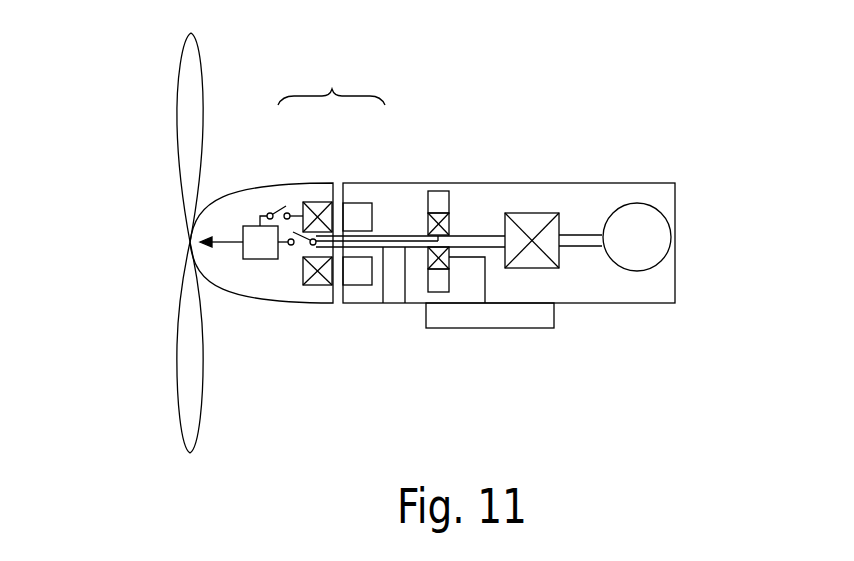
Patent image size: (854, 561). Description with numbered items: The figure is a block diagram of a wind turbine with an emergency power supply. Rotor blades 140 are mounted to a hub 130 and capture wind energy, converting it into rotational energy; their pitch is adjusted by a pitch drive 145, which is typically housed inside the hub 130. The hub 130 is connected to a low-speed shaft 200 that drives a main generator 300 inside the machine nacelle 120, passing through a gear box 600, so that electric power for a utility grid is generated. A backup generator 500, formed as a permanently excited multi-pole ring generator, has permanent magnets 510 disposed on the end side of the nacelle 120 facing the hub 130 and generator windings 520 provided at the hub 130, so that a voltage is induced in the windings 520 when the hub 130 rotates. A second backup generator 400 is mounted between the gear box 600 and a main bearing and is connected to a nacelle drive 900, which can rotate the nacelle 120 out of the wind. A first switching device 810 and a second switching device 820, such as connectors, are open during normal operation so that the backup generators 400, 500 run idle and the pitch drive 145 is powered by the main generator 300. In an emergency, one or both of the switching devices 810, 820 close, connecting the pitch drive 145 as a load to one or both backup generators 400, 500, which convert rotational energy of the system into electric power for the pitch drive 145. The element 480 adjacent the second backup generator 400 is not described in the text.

The rotor blades 140 is at (178, 85).
The pitch drive 145 is at (250, 226).
The second switching device 820 is at (276, 192).
The first switching device 810 is at (288, 260).
The backup generator 500 is at (331, 80).
The generator windings 520 is at (315, 202).
The permanent magnets 510 is at (352, 203).
The hub 130 is at (312, 302).
The machine nacelle 120 is at (602, 182).
The shaft 200 is at (482, 233).
The second backup generator 400 is at (443, 172).
The brake support 480 is at (478, 285).
The nacelle drive 900 is at (489, 329).
The gear box 600 is at (553, 268).
The main generator 300 is at (645, 273).